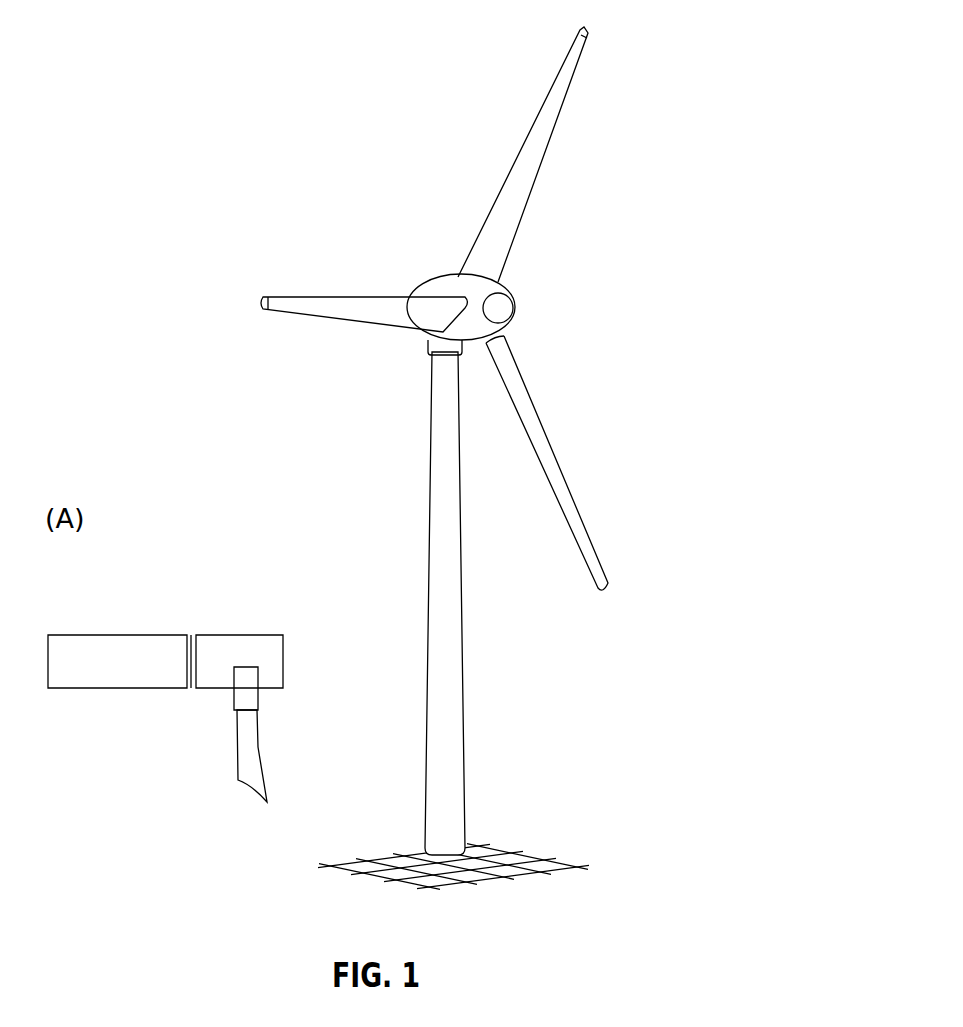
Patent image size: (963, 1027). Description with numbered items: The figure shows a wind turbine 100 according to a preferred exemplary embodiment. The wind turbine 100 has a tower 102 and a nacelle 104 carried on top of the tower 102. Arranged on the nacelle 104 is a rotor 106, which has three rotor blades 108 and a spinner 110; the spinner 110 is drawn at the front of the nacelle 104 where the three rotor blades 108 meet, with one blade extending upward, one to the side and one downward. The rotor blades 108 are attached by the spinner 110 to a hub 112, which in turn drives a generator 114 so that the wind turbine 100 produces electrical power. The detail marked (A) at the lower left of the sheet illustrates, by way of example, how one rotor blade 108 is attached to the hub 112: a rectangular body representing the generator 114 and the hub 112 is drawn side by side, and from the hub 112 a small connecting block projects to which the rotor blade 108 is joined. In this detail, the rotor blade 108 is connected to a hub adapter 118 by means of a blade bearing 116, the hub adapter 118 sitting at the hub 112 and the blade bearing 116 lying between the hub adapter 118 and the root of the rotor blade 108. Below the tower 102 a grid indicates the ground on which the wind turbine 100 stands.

The wind turbine 100 is at (462, 458).
The tower 102 is at (443, 680).
The nacelle 104 is at (440, 288).
The rotor 106 is at (462, 417).
The rotor blade 108 is at (548, 120).
The spinner 110 is at (503, 307).
The hub 112 is at (227, 650).
The generator 114 is at (122, 650).
The blade bearing 116 is at (248, 696).
The hub adapter 118 is at (248, 677).